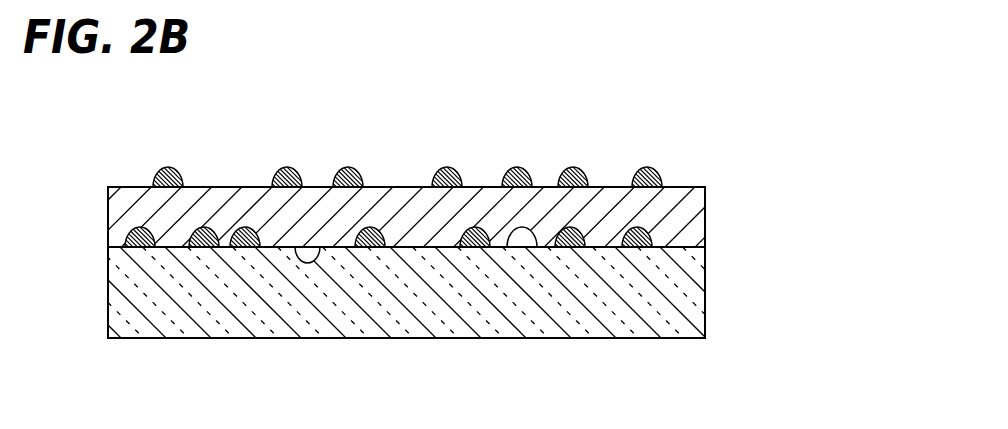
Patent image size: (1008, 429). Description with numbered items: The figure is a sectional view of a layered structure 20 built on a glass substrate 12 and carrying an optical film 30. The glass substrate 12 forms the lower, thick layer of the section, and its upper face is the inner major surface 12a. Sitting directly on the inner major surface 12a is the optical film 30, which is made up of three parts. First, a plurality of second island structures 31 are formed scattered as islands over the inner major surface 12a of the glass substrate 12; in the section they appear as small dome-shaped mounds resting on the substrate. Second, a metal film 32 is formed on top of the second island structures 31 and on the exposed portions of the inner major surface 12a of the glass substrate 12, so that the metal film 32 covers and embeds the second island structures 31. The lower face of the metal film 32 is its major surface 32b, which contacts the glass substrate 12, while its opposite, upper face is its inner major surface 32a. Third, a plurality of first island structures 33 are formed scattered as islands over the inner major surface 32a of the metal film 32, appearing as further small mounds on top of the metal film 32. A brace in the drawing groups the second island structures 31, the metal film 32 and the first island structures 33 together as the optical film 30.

The substrate with metal layer structure 20 is at (619, 131).
The glass substrate 12 is at (700, 295).
The inner major surface 12a is at (534, 238).
The optical film 30 is at (800, 150).
The second island structures 31 is at (653, 243).
The metal film 32 is at (700, 213).
The inner major surface 32a is at (402, 187).
The major surface 32b is at (321, 247).
The first island structures 33 is at (653, 176).